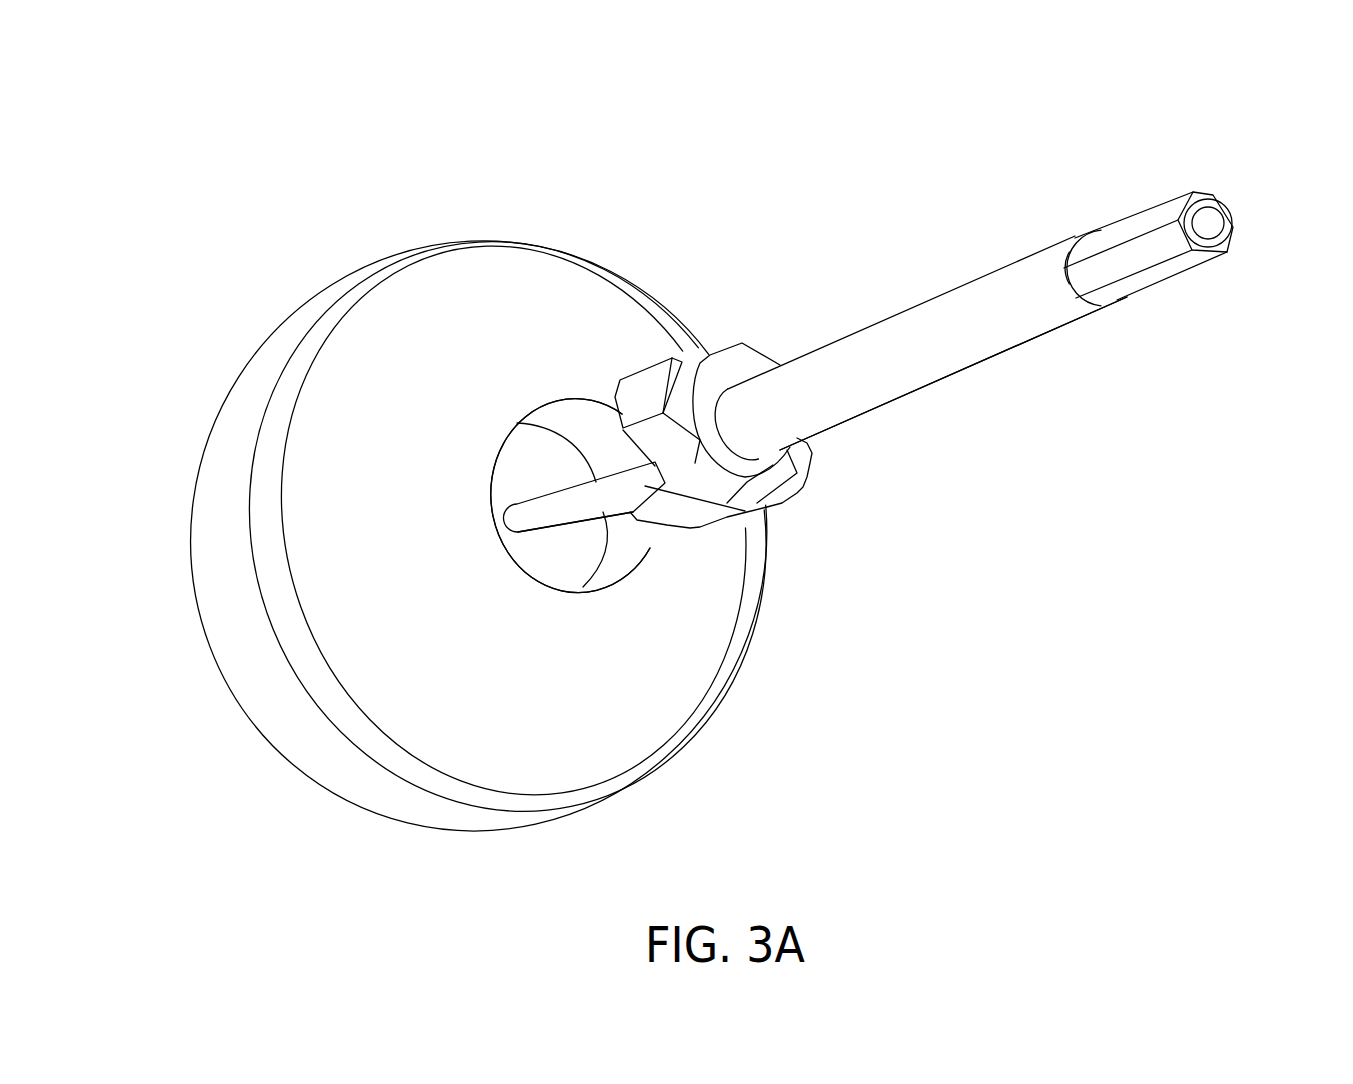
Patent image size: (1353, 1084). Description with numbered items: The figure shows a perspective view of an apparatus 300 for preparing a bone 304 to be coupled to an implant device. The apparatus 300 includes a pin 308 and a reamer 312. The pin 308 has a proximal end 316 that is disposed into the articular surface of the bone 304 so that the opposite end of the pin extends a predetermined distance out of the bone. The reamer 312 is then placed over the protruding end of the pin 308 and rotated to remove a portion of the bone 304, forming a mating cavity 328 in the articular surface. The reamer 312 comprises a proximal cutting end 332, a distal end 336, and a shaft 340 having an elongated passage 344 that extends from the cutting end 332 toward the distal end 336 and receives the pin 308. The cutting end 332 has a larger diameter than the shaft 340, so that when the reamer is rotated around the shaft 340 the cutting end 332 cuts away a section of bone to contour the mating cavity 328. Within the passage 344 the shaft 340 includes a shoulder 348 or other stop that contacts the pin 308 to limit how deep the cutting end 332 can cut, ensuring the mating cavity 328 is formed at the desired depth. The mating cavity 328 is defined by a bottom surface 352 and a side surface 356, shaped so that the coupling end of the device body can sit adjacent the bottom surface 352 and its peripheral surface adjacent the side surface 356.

The apparatus 300 is at (158, 103).
The bone 304 is at (340, 415).
The pin 308 is at (570, 497).
The reamer 312 is at (913, 395).
The proximal end 316 is at (527, 540).
The mating cavity 328 is at (490, 483).
The cutting end 332 is at (747, 352).
The distal end 336 is at (1194, 193).
The shaft 340 is at (954, 320).
The elongated passage 344 is at (1212, 224).
The shoulder 348 is at (1228, 248).
The bottom surface 352 is at (528, 465).
The side surface 356 is at (570, 420).